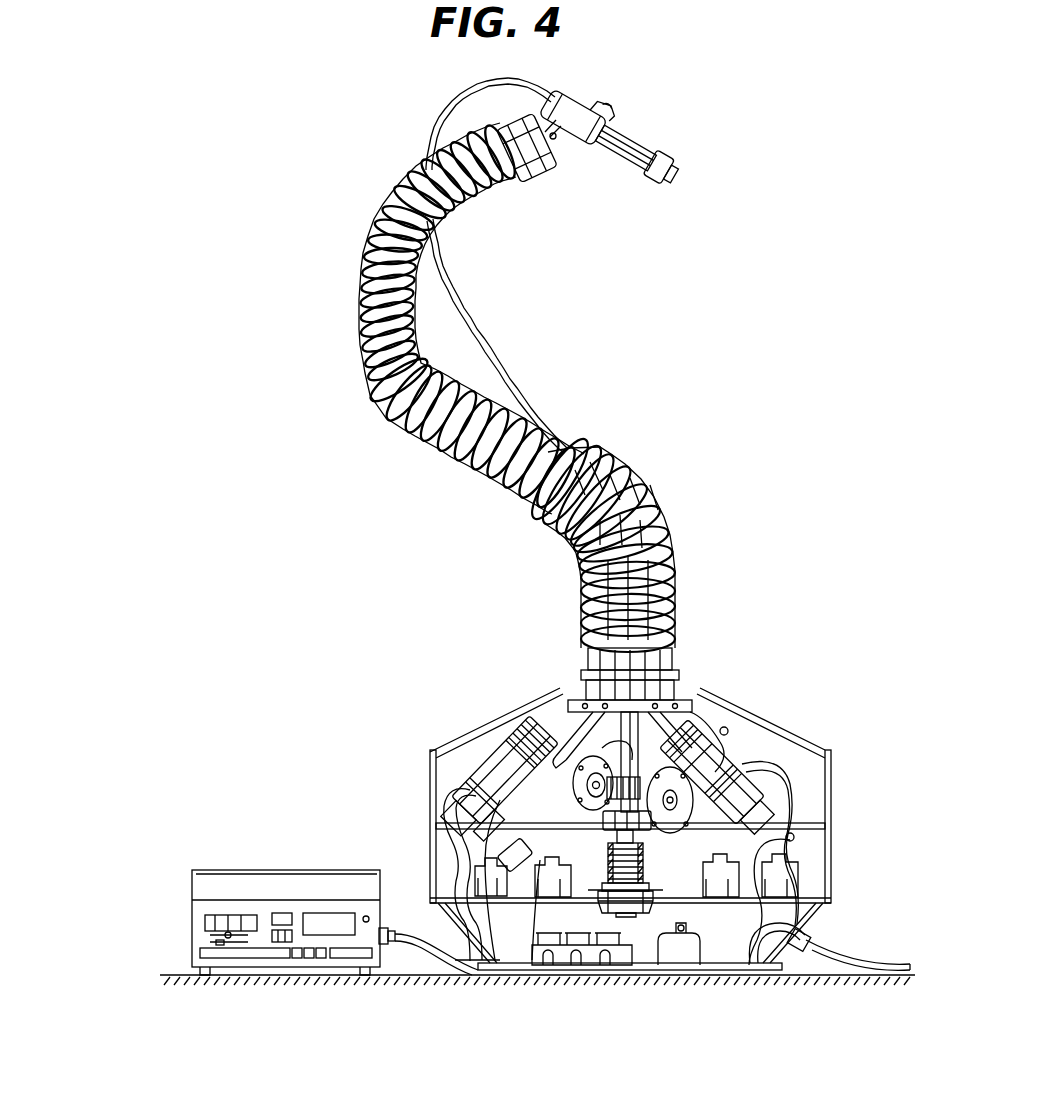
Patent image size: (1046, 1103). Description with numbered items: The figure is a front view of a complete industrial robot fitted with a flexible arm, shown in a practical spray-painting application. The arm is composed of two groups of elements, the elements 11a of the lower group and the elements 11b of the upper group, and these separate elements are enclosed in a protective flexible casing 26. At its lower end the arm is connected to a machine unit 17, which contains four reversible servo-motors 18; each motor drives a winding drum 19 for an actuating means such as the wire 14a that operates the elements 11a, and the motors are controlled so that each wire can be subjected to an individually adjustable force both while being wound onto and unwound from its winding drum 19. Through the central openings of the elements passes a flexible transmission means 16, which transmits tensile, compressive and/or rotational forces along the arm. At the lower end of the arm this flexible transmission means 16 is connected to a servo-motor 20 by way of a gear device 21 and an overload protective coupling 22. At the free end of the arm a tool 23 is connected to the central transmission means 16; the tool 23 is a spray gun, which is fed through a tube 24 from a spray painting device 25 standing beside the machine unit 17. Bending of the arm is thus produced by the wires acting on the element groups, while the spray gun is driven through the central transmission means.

The elements of lower group A 11a is at (666, 556).
The elements of upper group B 11b is at (392, 198).
The actuating means 14a is at (577, 731).
The flexible transmission means 16 is at (553, 140).
The machine unit 17 is at (772, 715).
The servo-motors 18 is at (552, 737).
The winding drum 19 is at (534, 752).
The servo-motor 20 is at (633, 900).
The gear device 21 is at (642, 822).
The overload protective coupling 22 is at (604, 818).
The tool 23 is at (617, 104).
The tube 24 is at (490, 352).
The spray painting device 25 is at (262, 870).
The protective flexible casing 26 is at (670, 608).